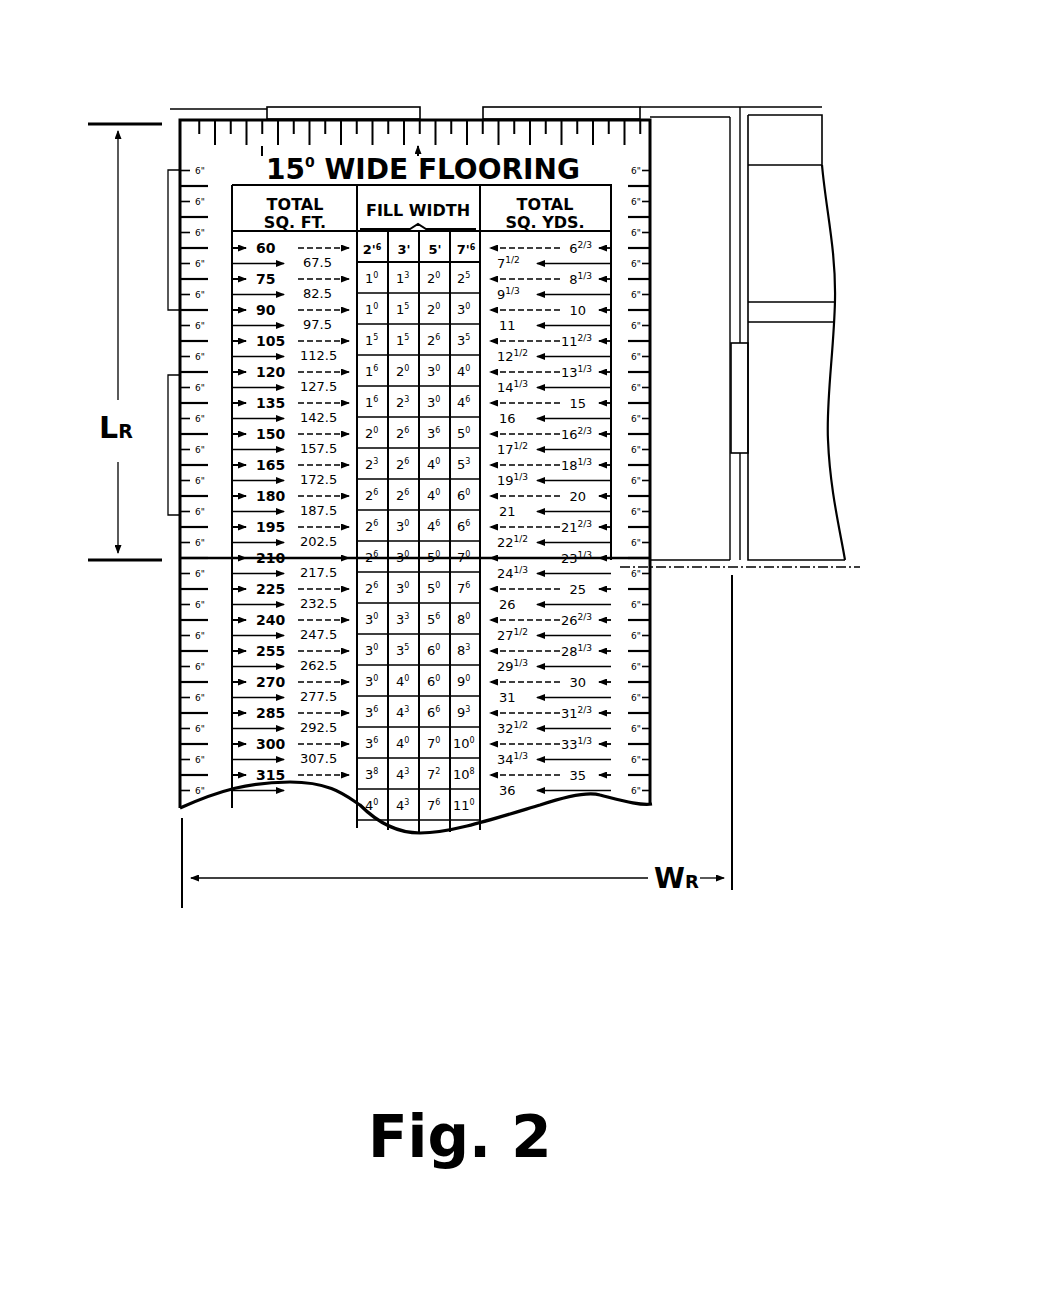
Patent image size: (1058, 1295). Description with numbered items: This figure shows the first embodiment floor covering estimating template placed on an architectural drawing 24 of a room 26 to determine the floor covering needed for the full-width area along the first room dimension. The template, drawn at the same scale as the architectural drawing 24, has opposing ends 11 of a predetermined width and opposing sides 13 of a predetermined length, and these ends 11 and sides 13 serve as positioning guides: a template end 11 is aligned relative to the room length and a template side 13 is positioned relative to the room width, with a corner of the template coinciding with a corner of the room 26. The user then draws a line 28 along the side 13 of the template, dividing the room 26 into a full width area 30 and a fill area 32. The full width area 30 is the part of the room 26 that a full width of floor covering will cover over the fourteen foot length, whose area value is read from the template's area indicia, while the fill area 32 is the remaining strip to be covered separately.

The template end 11 is at (250, 120).
The template side 13 is at (180, 614).
The architectural drawing 24 is at (756, 103).
The room 26 is at (667, 110).
The line 28 is at (660, 540).
The full width area 30 is at (708, 450).
The fill area 32 is at (415, 118).